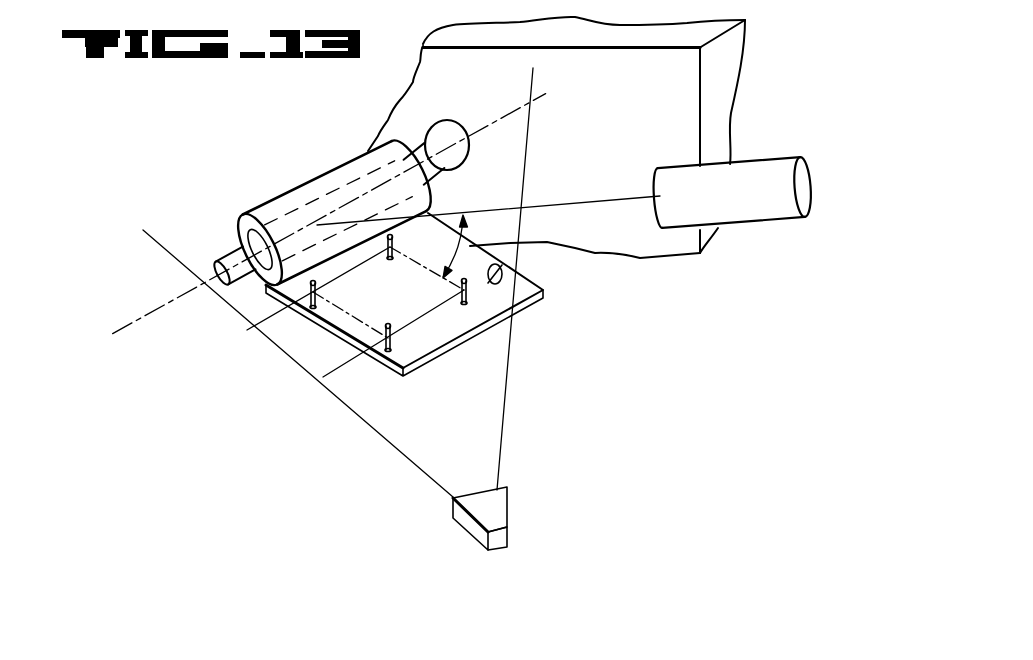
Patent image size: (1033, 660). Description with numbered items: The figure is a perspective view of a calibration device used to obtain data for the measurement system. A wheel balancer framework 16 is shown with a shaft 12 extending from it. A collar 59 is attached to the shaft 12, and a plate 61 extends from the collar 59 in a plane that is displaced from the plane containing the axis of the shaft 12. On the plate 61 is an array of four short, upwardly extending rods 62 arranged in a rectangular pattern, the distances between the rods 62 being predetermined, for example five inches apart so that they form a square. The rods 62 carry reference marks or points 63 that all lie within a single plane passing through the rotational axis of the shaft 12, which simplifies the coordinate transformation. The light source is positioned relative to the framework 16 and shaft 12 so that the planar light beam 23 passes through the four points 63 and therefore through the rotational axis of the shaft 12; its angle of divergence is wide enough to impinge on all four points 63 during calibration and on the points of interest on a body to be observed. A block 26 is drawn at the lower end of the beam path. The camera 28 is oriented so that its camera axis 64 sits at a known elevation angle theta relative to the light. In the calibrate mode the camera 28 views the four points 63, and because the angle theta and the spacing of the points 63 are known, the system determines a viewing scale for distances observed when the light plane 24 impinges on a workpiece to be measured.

The shaft 12 is at (426, 143).
The wheel balancer framework 16 is at (740, 48).
The planar light beam 23 is at (398, 447).
The light plane 24 is at (503, 428).
The wedge block 26 is at (497, 517).
The camera 28 is at (811, 183).
The collar 59 is at (343, 165).
The plate 61 is at (537, 295).
The rods 62 is at (458, 296).
The reference points 63 is at (395, 232).
The camera axis 64 is at (622, 198).